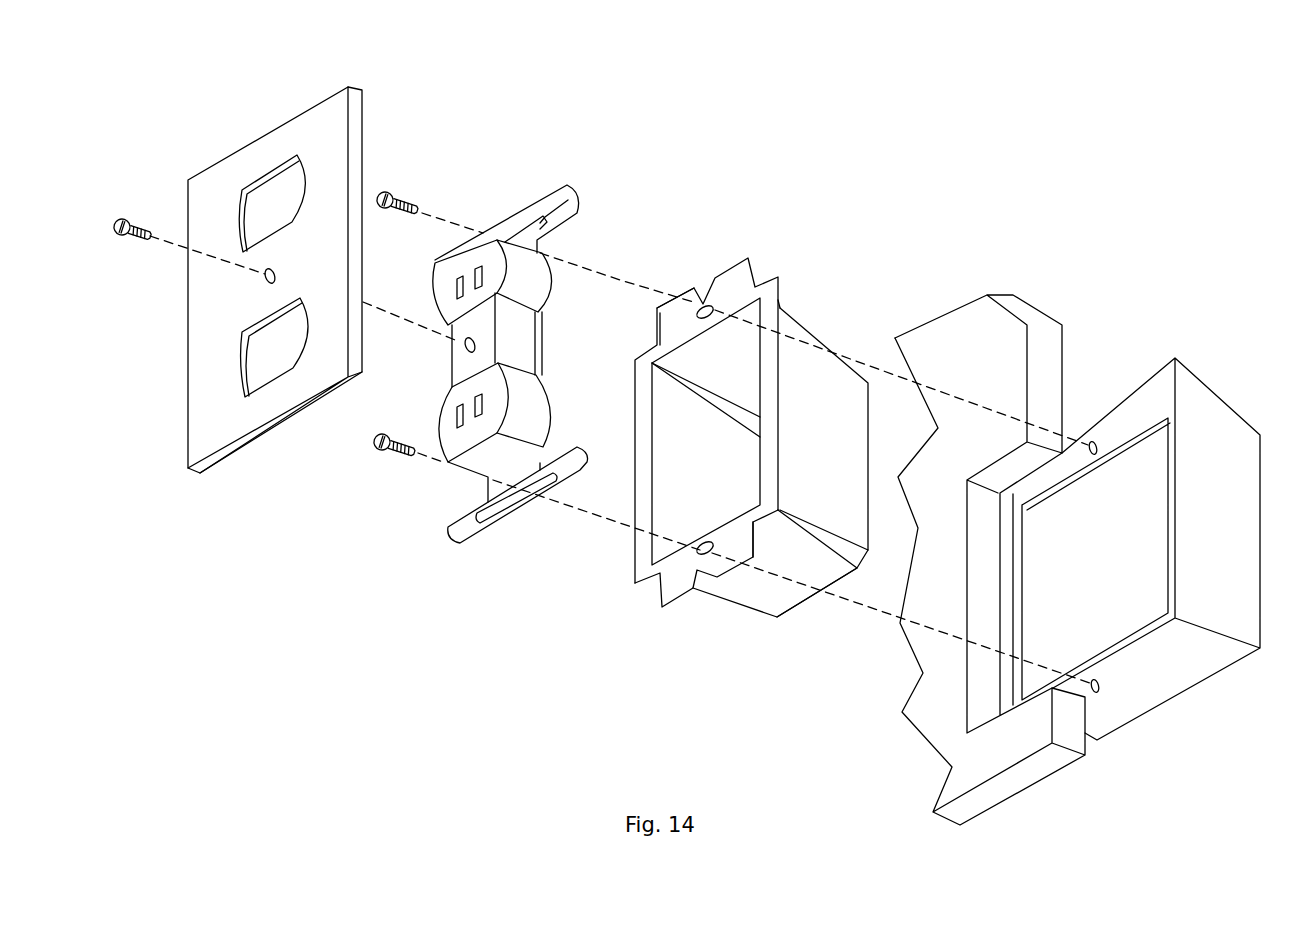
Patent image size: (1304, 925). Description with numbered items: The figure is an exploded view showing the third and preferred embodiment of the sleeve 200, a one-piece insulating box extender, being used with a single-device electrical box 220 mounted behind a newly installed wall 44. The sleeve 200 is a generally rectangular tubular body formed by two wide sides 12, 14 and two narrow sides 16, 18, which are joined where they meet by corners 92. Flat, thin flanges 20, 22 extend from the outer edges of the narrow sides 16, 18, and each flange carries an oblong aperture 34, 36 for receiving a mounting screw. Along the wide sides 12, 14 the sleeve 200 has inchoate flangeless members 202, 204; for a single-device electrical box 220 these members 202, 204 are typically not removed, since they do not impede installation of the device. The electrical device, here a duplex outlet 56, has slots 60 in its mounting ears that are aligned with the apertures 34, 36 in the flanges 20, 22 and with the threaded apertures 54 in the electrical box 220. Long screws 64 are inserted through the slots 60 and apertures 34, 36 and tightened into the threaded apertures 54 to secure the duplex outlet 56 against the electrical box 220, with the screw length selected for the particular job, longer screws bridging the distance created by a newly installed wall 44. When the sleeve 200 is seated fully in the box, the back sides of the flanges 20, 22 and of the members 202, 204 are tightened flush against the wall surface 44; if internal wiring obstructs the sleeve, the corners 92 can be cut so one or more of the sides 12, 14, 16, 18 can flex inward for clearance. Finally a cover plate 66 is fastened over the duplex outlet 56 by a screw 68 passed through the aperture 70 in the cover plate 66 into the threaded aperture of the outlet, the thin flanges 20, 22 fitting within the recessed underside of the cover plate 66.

The wide side 12 is at (824, 429).
The wide side 14 is at (706, 432).
The narrow side 16 is at (780, 563).
The narrow side 18 is at (706, 385).
The flange 20 is at (737, 548).
The flange 22 is at (741, 266).
The aperture 34 is at (707, 563).
The aperture 36 is at (706, 302).
The newly installed wall 44 is at (990, 560).
The threaded aperture 54 is at (1095, 443).
The duplex outlet 56 is at (616, 188).
The slot 60 is at (524, 238).
The long screw 64 is at (396, 206).
The cover plate 66 is at (374, 145).
The screw 68 is at (128, 242).
The aperture 70 is at (266, 283).
The corner 92 is at (834, 542).
The sleeve 200 is at (813, 425).
The inchoate flangeless member 202 is at (773, 387).
The inchoate flangeless member 204 is at (640, 442).
The electrical box 220 is at (1206, 732).